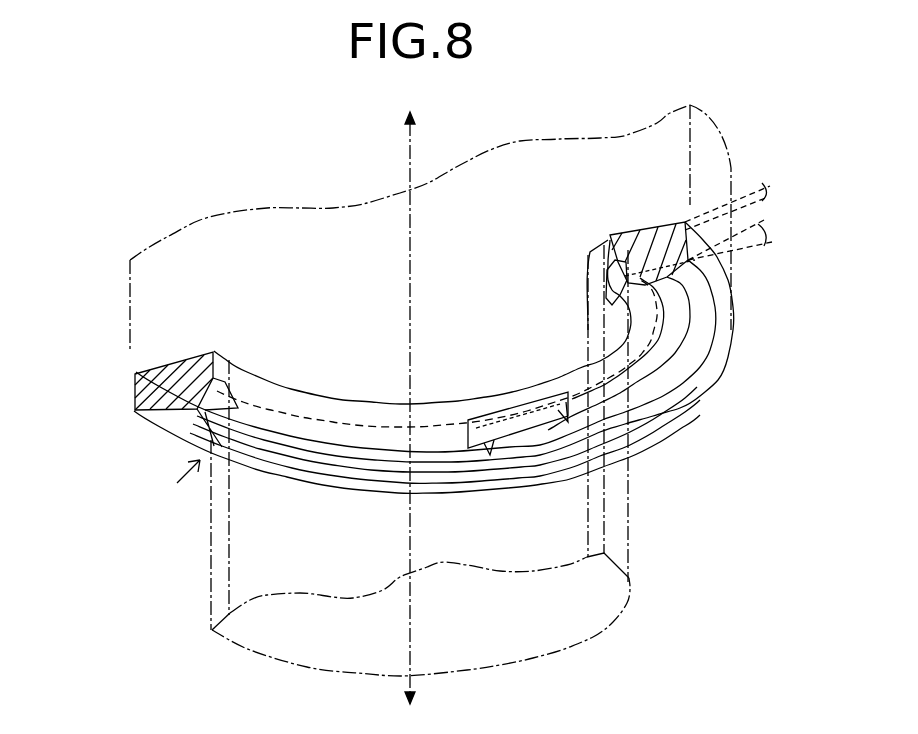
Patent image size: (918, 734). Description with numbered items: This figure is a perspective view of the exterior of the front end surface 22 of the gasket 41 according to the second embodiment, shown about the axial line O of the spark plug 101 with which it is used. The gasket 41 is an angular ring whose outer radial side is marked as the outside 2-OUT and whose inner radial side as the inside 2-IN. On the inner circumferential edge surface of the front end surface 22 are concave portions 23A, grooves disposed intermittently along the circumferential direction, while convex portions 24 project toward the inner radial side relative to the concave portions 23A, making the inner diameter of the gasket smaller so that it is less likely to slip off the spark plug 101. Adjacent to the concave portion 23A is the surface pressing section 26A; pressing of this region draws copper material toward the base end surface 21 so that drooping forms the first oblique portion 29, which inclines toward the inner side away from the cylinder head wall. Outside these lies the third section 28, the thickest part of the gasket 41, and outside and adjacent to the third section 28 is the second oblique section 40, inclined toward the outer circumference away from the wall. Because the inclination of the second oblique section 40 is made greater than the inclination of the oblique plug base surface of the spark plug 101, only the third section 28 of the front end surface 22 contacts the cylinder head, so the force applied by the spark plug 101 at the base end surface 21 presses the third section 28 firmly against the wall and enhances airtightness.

The central axis O is at (428, 119).
The base end surface 21 is at (672, 217).
The spark plug 101 is at (222, 577).
The inside of the gasket 2-IN is at (212, 350).
The outside of the gasket 2-OUT is at (134, 373).
The second oblique section 40 is at (712, 354).
The surface pressing section 26A is at (705, 390).
The first oblique portion 29 is at (660, 405).
The third section 28 is at (637, 414).
The concave portion 23A is at (200, 420).
The gasket 41 is at (173, 481).
The convex portion 24 is at (603, 248).
The front end surface 22 is at (680, 286).